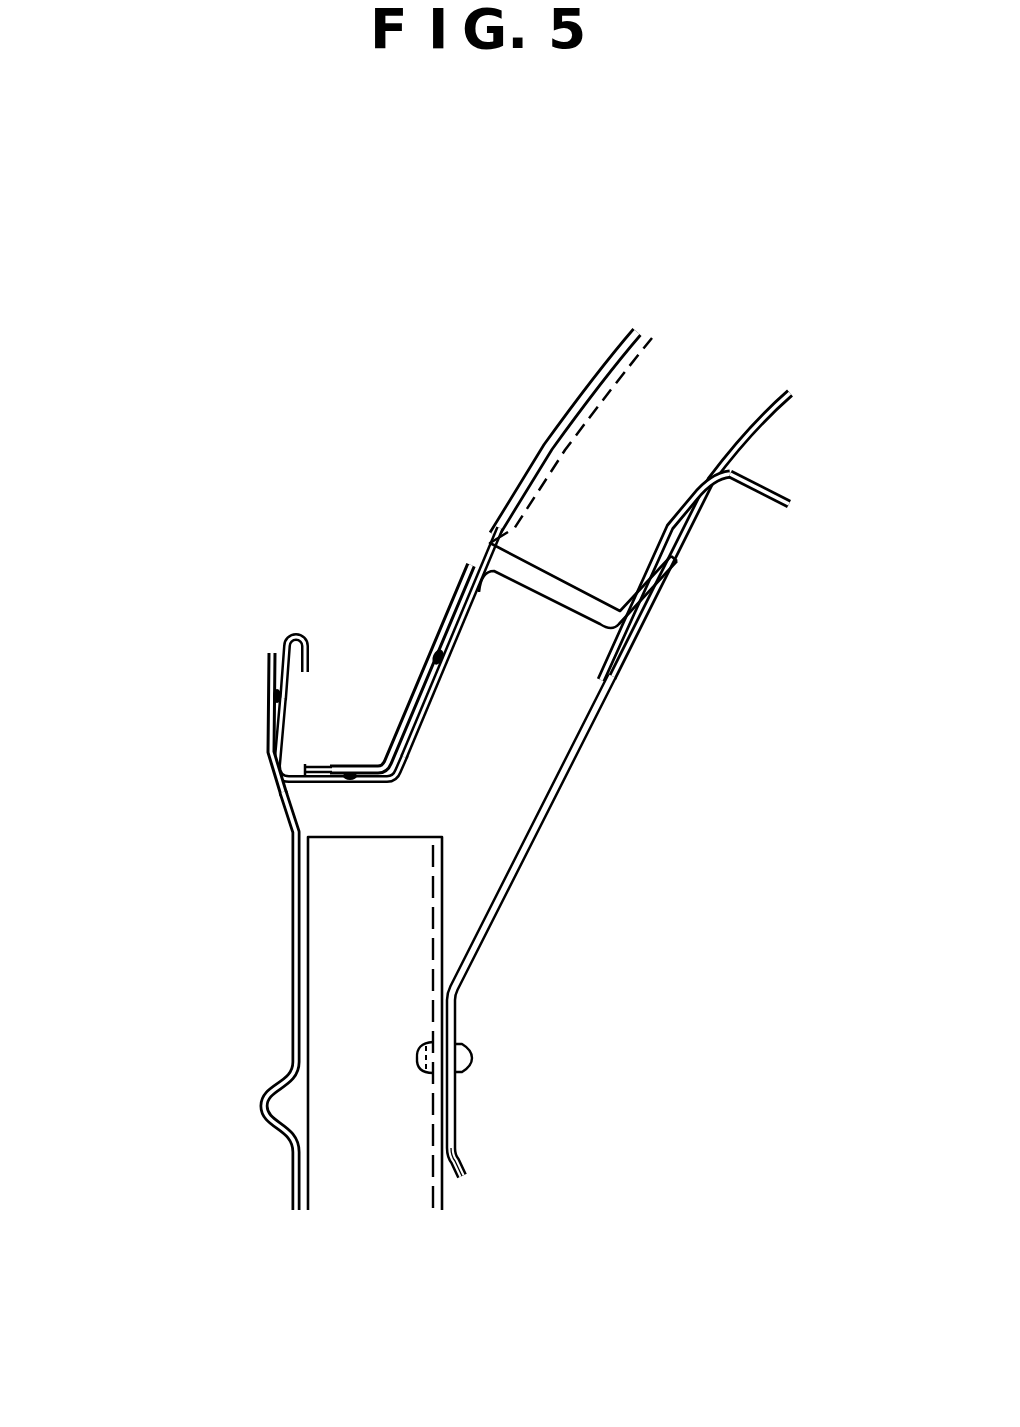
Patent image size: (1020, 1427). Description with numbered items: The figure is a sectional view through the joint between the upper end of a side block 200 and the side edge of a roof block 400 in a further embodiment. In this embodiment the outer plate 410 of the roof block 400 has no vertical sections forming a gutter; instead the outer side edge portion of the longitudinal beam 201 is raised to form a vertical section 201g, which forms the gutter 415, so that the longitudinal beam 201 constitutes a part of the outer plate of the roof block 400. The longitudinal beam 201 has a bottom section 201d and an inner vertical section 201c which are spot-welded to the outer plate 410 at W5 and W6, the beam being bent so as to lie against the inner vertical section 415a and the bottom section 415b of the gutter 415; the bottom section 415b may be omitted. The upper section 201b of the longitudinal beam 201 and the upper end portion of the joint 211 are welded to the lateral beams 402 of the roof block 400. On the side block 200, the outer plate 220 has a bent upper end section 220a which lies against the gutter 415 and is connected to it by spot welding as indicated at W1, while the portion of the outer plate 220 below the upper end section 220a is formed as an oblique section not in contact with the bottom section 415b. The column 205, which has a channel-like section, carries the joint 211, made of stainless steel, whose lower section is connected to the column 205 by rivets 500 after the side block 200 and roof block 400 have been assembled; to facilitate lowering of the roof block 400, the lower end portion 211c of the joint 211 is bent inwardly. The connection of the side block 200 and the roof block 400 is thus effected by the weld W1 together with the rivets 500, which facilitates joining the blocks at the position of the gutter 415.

The roof block 400 is at (657, 402).
The lateral beams 402 is at (690, 384).
The outer plate 410 is at (602, 372).
The gutter 415 is at (407, 572).
The inner vertical section 415a is at (465, 572).
The bottom section 415b is at (318, 767).
The longitudinal beam 201 is at (477, 651).
The upper section 201b is at (713, 495).
The inner vertical section 201c is at (427, 706).
The bottom section 201d is at (300, 800).
The vertical section 201g is at (307, 660).
The side block 200 is at (377, 926).
The outer plate 220 is at (207, 883).
The upper end section 220a is at (268, 668).
The column 205 is at (378, 1172).
The joint 211 is at (550, 926).
The lower end portion 211c is at (464, 1162).
The rivets 500 is at (473, 1058).
The spot weld W1 is at (274, 694).
The spot weld W5 is at (350, 773).
The spot weld W6 is at (429, 646).